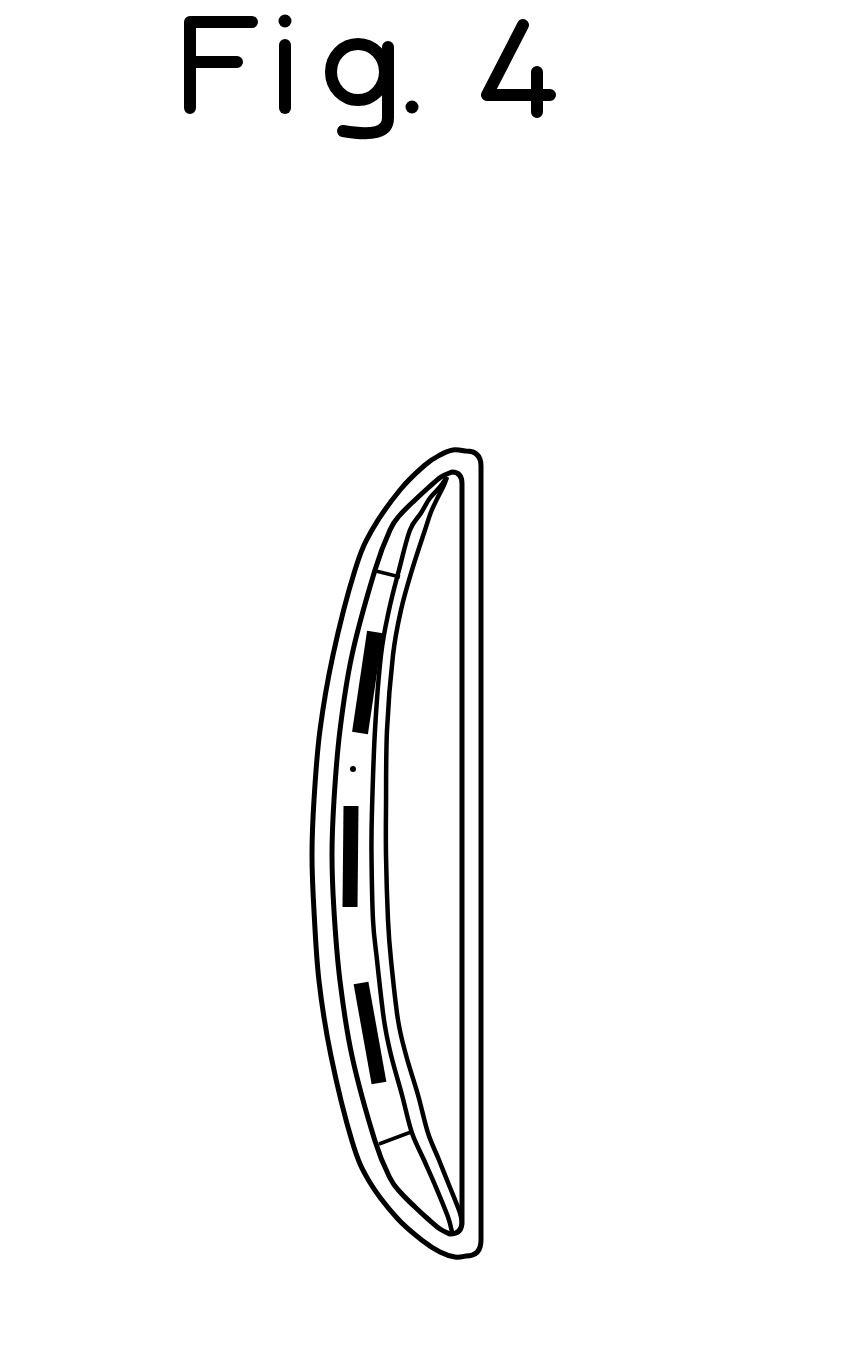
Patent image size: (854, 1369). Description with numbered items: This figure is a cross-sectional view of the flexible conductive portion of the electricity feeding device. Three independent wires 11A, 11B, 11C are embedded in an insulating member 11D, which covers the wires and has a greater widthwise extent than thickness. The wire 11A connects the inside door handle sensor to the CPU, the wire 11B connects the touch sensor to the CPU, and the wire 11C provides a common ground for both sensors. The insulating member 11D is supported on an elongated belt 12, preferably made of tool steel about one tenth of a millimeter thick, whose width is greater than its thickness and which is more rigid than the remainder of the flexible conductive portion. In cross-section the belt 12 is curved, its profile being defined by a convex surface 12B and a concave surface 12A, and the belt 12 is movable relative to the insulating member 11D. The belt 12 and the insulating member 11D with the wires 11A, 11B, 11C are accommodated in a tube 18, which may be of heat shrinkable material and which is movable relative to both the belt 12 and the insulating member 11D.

The tube 18 is at (378, 518).
The belt 12 is at (401, 832).
The concave surface 12A is at (388, 909).
The convex surface 12B is at (63, 932).
The wire 11A is at (366, 1037).
The wire 11B is at (356, 684).
The wire 11C is at (352, 858).
The insulating member 11D is at (353, 769).